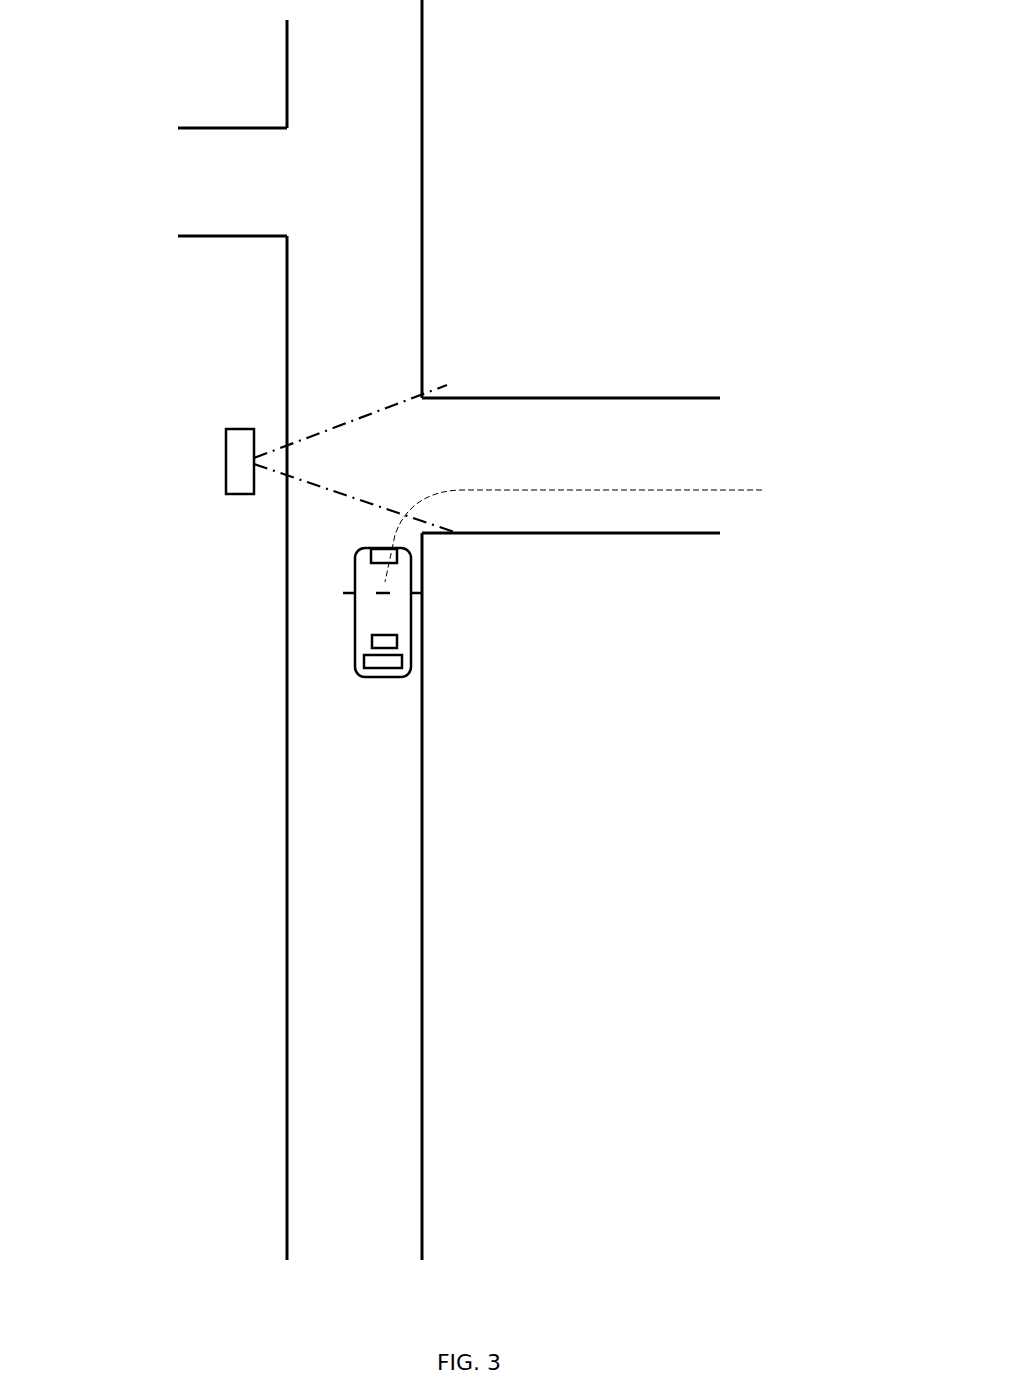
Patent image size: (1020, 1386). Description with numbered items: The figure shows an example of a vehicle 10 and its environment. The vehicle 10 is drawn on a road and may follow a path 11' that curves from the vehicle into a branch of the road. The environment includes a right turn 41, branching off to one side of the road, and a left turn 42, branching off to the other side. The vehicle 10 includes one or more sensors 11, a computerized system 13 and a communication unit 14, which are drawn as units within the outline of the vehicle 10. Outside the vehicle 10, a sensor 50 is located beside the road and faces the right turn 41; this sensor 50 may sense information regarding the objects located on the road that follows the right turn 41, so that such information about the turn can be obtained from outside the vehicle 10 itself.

The vehicle 10 is at (418, 614).
The sensor 11 is at (361, 535).
The path 11' is at (589, 500).
The computerized system 13 is at (372, 636).
The communication unit 14 is at (368, 672).
The right turn 41 is at (542, 413).
The left turn 42 is at (231, 157).
The sensor 50 is at (240, 429).